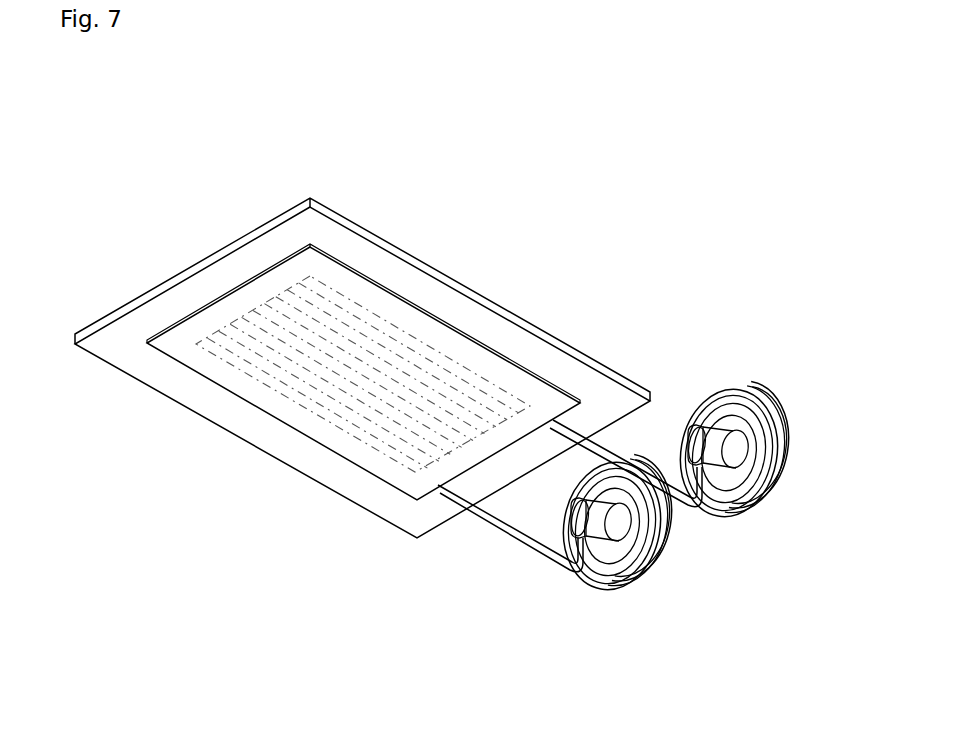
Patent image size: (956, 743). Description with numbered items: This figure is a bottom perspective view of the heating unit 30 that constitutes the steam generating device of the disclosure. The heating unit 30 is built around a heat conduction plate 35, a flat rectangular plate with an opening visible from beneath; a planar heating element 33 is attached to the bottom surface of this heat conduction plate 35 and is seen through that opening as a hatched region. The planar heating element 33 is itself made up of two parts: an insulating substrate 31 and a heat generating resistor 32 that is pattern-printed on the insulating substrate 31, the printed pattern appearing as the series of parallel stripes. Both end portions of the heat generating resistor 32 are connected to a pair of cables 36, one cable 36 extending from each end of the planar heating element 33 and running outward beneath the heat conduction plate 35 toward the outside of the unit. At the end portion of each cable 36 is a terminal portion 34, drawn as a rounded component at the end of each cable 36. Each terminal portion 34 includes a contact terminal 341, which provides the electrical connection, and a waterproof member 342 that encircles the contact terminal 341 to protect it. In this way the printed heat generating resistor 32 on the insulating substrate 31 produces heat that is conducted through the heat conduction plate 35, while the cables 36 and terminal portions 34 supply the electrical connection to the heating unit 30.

The heating unit 30 is at (508, 184).
The insulating substrate 31 is at (183, 350).
The heat generating resistor 32 is at (253, 370).
The planar heating element 33 is at (178, 504).
The terminal portion 34 is at (793, 313).
The contact terminal 341 is at (714, 422).
The waterproof member 342 is at (785, 395).
The heat conduction plate 35 is at (167, 278).
The cable 36 is at (500, 529).